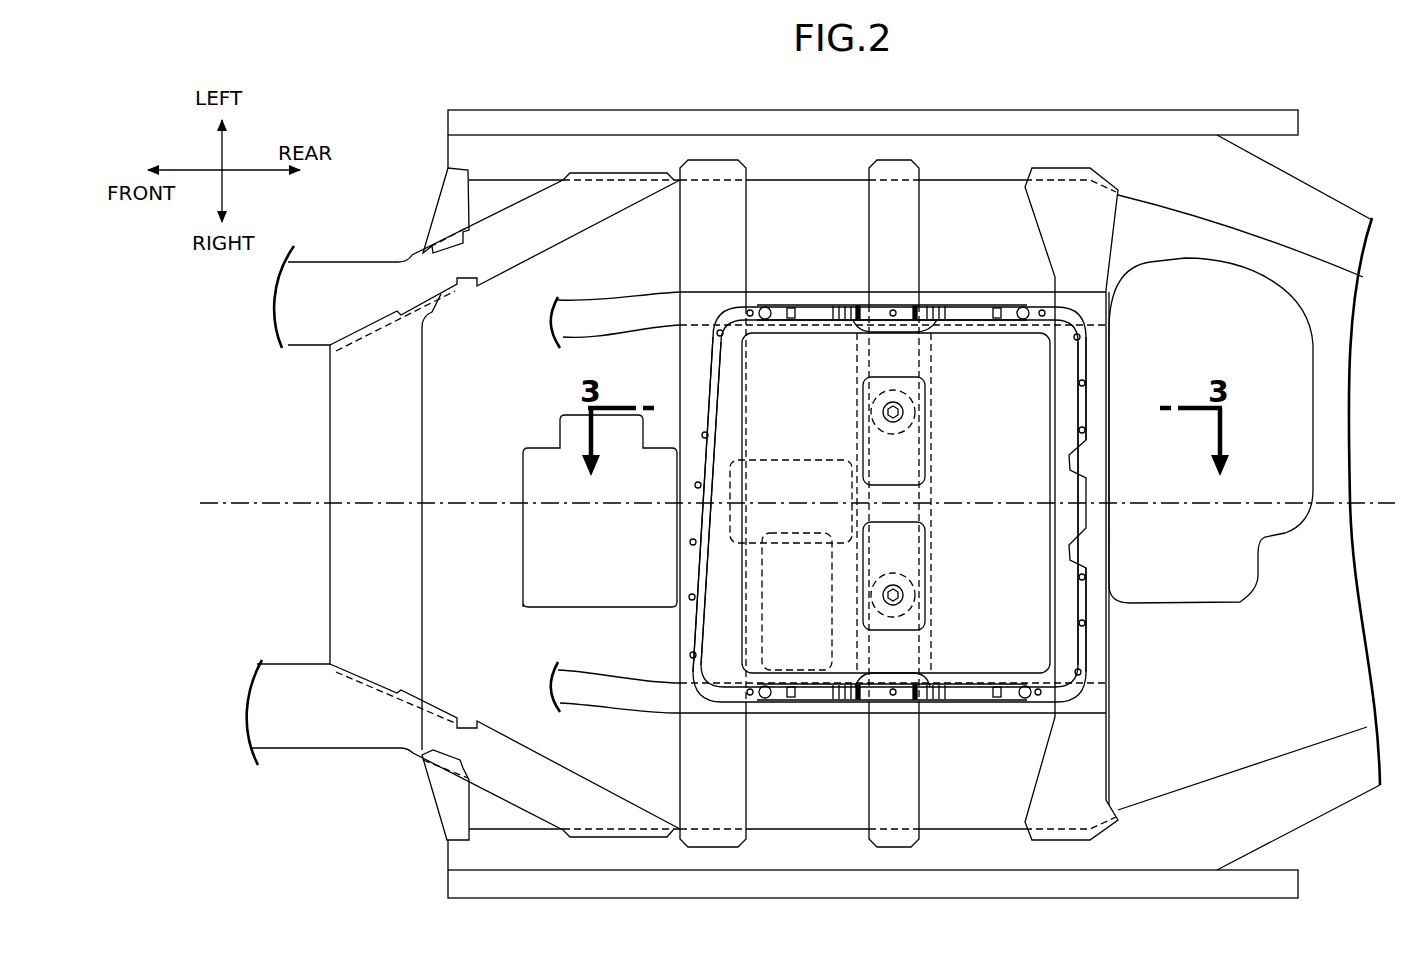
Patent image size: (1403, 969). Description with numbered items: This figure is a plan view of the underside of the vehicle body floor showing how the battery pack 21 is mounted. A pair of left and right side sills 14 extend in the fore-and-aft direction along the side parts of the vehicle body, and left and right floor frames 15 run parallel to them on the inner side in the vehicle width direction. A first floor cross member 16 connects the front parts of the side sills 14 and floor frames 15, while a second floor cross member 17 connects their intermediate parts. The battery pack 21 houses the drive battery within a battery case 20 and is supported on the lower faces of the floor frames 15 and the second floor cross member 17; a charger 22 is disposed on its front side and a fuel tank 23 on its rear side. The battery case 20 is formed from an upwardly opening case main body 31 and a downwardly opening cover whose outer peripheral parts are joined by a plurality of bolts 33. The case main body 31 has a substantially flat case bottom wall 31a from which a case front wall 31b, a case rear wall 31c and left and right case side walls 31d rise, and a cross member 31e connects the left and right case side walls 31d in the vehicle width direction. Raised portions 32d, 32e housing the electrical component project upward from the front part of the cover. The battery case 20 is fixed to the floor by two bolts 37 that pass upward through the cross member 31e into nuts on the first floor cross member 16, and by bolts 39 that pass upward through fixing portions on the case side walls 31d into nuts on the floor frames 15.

The side sill 14 is at (826, 155).
The floor frame 15 is at (963, 292).
The first floor cross member 16 is at (692, 242).
The second floor cross member 17 is at (887, 215).
The battery case 20 is at (887, 504).
The battery pack 21 is at (837, 565).
The charger 22 is at (545, 548).
The fuel tank 23 is at (1233, 577).
The case main body 31 is at (887, 504).
The case bottom wall 31a is at (896, 503).
The case front wall 31b is at (700, 578).
The case rear wall 31c is at (1083, 412).
The case side wall 31d is at (826, 304).
The cross member 31e is at (933, 360).
The raised portion 32d is at (760, 613).
The raised portion 32e is at (806, 457).
The bolt 33 is at (718, 330).
The bolt 37 is at (903, 413).
The bolt 39 is at (766, 307).